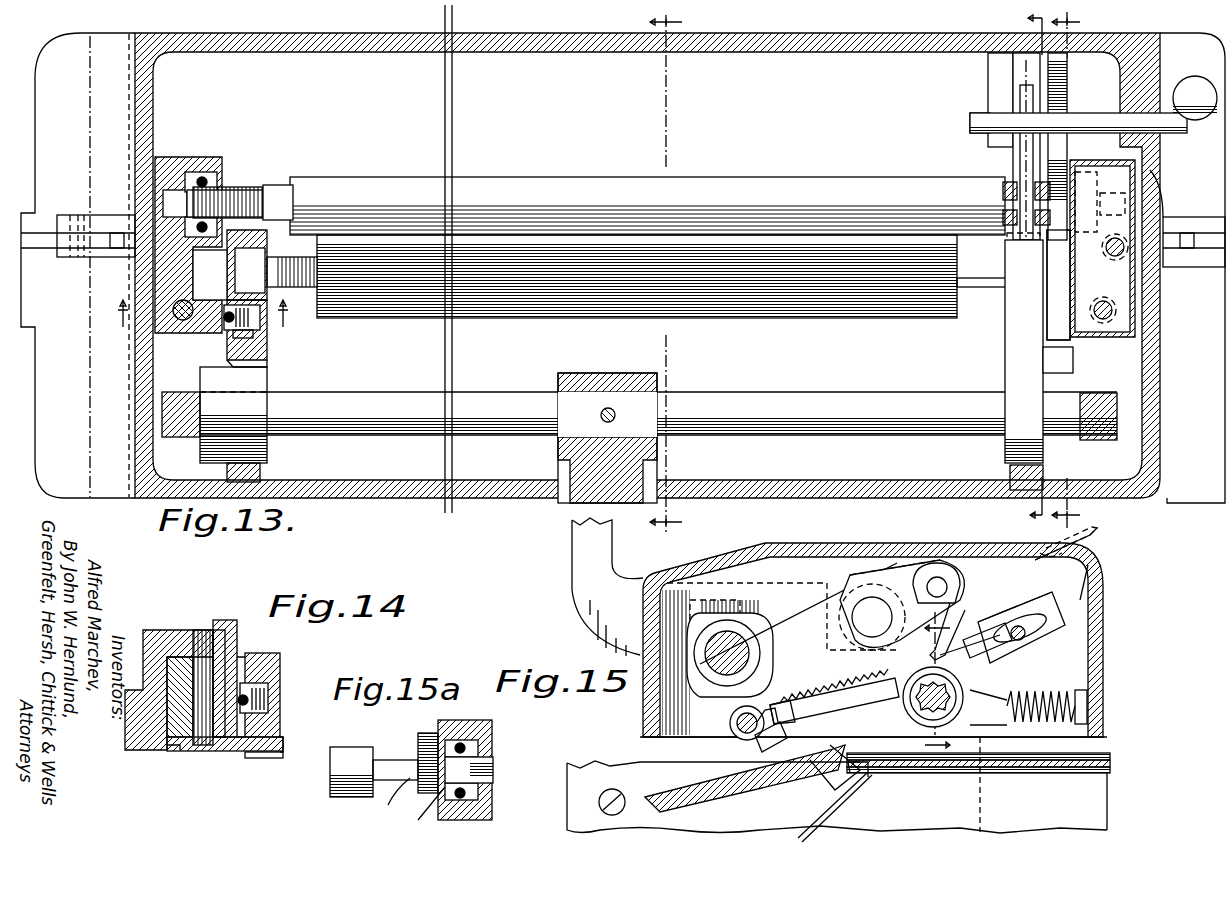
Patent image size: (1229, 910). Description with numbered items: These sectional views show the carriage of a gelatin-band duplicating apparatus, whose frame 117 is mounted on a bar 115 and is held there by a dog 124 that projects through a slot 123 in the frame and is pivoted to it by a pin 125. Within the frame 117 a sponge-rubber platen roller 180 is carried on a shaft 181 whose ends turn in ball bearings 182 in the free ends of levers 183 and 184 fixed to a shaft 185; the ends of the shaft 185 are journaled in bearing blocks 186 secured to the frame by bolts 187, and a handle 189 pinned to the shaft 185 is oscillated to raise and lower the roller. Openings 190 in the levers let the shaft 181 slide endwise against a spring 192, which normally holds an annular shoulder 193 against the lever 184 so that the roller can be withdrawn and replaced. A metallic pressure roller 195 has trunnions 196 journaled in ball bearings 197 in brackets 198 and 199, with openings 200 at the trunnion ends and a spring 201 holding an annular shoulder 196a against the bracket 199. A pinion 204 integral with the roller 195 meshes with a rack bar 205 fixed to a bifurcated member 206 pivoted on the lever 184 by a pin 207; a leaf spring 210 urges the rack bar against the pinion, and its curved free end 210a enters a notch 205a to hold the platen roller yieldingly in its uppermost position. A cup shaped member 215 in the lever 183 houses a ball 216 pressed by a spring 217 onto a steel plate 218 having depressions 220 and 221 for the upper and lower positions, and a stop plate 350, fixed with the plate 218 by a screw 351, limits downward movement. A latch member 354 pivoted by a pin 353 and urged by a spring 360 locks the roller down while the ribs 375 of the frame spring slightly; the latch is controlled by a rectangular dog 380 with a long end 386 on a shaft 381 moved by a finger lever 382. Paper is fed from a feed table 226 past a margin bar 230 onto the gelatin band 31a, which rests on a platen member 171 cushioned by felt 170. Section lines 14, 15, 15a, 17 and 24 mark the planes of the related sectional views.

In FIG. 13, the carriage frame 117 is at (543, 54).
In FIG. 14, the carriage frame 117 is at (150, 630).
In FIG. 13, the dog 124 is at (83, 258).
In FIG. 13, the pin 125 is at (72, 215).
In FIG. 13, the slot 123 is at (118, 233).
In FIG. 13, the pressure roller 195 is at (540, 185).
In FIG. 15A, the pressure roller 195 is at (348, 730).
In FIG. 13, the platen roller 180 is at (516, 320).
In FIG. 13, the shaft 185 is at (727, 396).
In FIG. 15, the shaft 185 is at (725, 660).
In FIG. 13, the bearing block 186 is at (185, 437).
In FIG. 13, the lever 183 is at (267, 378).
In FIG. 14, the lever 183 is at (280, 722).
In FIG. 13, the handle 189 is at (655, 478).
In FIG. 15, the handle 189 is at (572, 545).
In FIG. 13, the rib 375 is at (262, 472).
In FIG. 13, the opening 200 is at (178, 190).
In FIG. 15A, the opening 200 is at (490, 752).
In FIG. 13, the ball bearing 197 is at (215, 172).
In FIG. 15A, the ball bearing 197 is at (455, 740).
In FIG. 13, the trunnion 196 is at (205, 200).
In FIG. 15A, the trunnion 196 is at (387, 757).
In FIG. 15A, the annular shoulder 196a is at (417, 813).
In FIG. 13, the spring 201 is at (245, 190).
In FIG. 13, the ball bearing 182 is at (285, 210).
In FIG. 14, the ball bearing 182 is at (272, 695).
In FIG. 13, the spring 192 is at (300, 250).
In FIG. 13, the opening 190 is at (300, 230).
In FIG. 15, the opening 190 is at (1105, 785).
In FIG. 13, the bracket 198 is at (197, 283).
In FIG. 14, the bracket 198 is at (178, 660).
In FIG. 13, the screw 351 is at (185, 313).
In FIG. 14, the screw 351 is at (175, 750).
In FIG. 13, the stop plate 350 is at (268, 327).
In FIG. 14, the stop plate 350 is at (275, 755).
In FIG. 13, the ball 216 is at (214, 330).
In FIG. 14, the ball 216 is at (250, 702).
In FIG. 13, the spring 217 is at (245, 345).
In FIG. 14, the spring 217 is at (268, 690).
In FIG. 13, the steel plate 218 is at (230, 335).
In FIG. 14, the steel plate 218 is at (228, 622).
In FIG. 13, the cup shaped member 215 is at (225, 365).
In FIG. 14, the cup shaped member 215 is at (258, 685).
In FIG. 14, the depression 220 is at (237, 630).
In FIG. 14, the depression 221 is at (225, 752).
In FIG. 13, the rectangular dog 380 is at (1005, 150).
In FIG. 15, the rectangular dog 380 is at (1065, 612).
In FIG. 13, the latch member 354 is at (1025, 98).
In FIG. 15, the latch member 354 is at (970, 590).
In FIG. 13, the leaf spring 210 is at (1068, 90).
In FIG. 15, the leaf spring 210 is at (1060, 595).
In FIG. 15, the curved free end 210a is at (920, 705).
In FIG. 13, the shaft 381 is at (1085, 118).
In FIG. 15, the shaft 381 is at (1060, 645).
In FIG. 13, the finger piece 382 is at (1193, 77).
In FIG. 13, the pin 353 is at (1008, 203).
In FIG. 15, the pin 353 is at (940, 575).
In FIG. 13, the annular shoulder 193 is at (1006, 262).
In FIG. 13, the shaft 181 is at (990, 288).
In FIG. 15, the shaft 181 is at (870, 615).
In FIG. 13, the lever 184 is at (1012, 367).
In FIG. 15, the lever 184 is at (845, 585).
In FIG. 13, the rack bar 205 is at (1070, 284).
In FIG. 15A, the rack bar 205 is at (424, 733).
In FIG. 15, the rack bar 205 is at (860, 672).
In FIG. 15, the notch 205a is at (1005, 643).
In FIG. 13, the bifurcated member 206 is at (1073, 360).
In FIG. 15, the bifurcated member 206 is at (770, 755).
In FIG. 13, the bracket 199 is at (1118, 288).
In FIG. 15A, the bracket 199 is at (482, 722).
In FIG. 15A, the pinion 204 is at (385, 798).
In FIG. 15, the pinion 204 is at (1000, 690).
In FIG. 15, the bolt 187 is at (665, 610).
In FIG. 15, the feed table 226 is at (1102, 555).
In FIG. 15, the long end 386 is at (1050, 622).
In FIG. 15, the spring 360 is at (1088, 680).
In FIG. 15, the pin 207 is at (735, 735).
In FIG. 15, the margin bar 230 is at (732, 797).
In FIG. 15, the gelatin band 31a is at (840, 800).
In FIG. 15, the platen member 171 is at (1110, 755).
In FIG. 15, the felt 170 is at (1110, 764).
In FIG. 15, the bar 115 is at (985, 795).
In FIG. 13, the section line 14 is at (201, 313).
In FIG. 13, the section line 15 is at (1080, 270).
In FIG. 15, the section line 15a is at (925, 682).
In FIG. 13, the section line 17 is at (674, 276).
In FIG. 13, the section line 24 is at (1019, 269).